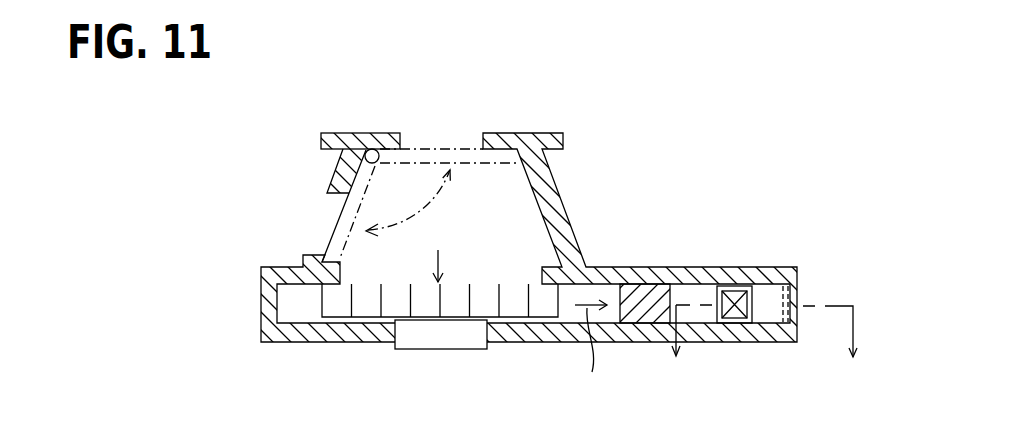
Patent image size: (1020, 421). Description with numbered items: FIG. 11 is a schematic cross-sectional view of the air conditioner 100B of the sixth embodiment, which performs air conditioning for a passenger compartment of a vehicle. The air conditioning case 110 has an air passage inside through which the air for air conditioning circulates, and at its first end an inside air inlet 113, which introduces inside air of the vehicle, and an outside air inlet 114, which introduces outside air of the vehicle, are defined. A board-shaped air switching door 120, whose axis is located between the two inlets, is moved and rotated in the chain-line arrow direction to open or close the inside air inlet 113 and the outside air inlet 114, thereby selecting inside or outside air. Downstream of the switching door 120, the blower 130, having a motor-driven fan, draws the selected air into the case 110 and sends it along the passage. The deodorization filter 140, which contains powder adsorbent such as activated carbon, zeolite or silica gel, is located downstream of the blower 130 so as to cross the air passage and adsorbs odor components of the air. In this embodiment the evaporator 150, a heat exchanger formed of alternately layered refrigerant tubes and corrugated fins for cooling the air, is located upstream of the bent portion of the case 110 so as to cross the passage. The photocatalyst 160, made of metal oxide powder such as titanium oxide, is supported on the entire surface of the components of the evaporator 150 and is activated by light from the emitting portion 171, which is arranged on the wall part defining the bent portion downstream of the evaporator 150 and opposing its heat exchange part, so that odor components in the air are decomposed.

The air conditioner 100B is at (342, 118).
The air conditioning case 110 is at (628, 268).
The inside air inlet 113 is at (320, 222).
The outside air inlet 114 is at (415, 140).
The air switching door 120 is at (435, 144).
The blower 130 is at (425, 349).
The deodorization filter 140 is at (640, 318).
The evaporator 150 is at (735, 313).
The photocatalyst 160 is at (753, 306).
The emitting portion 171 is at (790, 300).